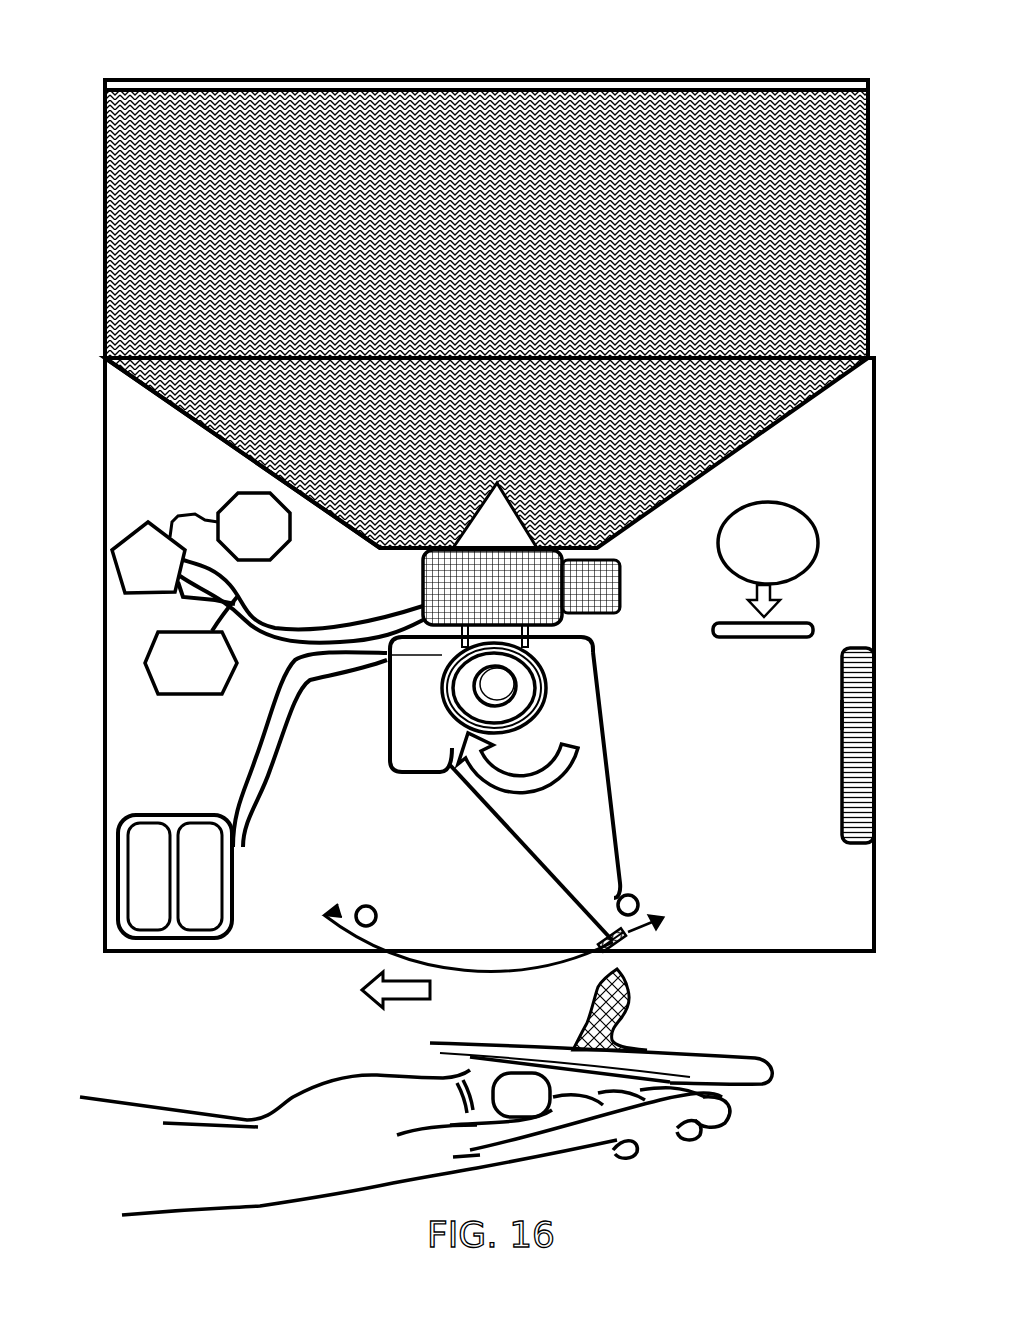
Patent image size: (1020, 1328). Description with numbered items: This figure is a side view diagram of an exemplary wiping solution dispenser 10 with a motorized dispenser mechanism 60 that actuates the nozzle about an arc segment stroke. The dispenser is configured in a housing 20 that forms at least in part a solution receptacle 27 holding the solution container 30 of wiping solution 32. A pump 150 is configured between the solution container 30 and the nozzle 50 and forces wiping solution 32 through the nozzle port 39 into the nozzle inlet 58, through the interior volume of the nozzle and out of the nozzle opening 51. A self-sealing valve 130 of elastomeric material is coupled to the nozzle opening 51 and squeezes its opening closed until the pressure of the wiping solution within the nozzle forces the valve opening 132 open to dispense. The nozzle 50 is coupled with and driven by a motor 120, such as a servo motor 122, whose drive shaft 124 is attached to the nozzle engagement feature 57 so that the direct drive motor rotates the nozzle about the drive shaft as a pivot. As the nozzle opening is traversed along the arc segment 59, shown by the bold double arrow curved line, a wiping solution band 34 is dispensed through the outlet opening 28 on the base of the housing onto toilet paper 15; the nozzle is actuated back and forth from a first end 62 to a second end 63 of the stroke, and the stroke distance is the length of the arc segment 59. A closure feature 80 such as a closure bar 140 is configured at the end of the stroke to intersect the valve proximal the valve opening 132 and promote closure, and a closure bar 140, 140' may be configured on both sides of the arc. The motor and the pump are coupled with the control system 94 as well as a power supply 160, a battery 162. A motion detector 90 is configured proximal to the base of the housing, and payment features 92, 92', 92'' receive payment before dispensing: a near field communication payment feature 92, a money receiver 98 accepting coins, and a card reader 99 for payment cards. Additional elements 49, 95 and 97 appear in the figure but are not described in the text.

The wiping solution dispenser 10 is at (88, 140).
The toilet paper 15 is at (712, 1055).
The housing 20 is at (833, 267).
The solution receptacle 27 is at (805, 147).
The outlet opening 28 is at (477, 970).
The solution container 30 is at (703, 365).
The wiping solution 32 is at (735, 145).
The wiping solution band 34 is at (570, 1033).
The nozzle port 39 is at (415, 552).
The dispensing head 49 is at (605, 515).
The nozzle 50 is at (587, 800).
The nozzle opening 51 is at (612, 922).
The nozzle engagement feature 57 is at (547, 680).
The nozzle inlet 58 is at (560, 640).
The arc segment 59 is at (543, 965).
The motorized dispenser mechanism 60 is at (550, 697).
The first end of stroke 62 is at (665, 920).
The second end of stroke 63 is at (330, 915).
The closure feature 80 is at (640, 905).
The motion detector 90 is at (177, 677).
The payment feature 92 is at (300, 703).
The payment feature 92' is at (751, 652).
The payment feature 92'' is at (801, 698).
The control system 94 is at (190, 507).
The sensor 95 is at (135, 578).
The processor 97 is at (240, 542).
The money receiver 98 is at (735, 622).
The card reader 99 is at (842, 783).
The motor 120 is at (403, 727).
The servo motor 122 is at (400, 787).
The drive shaft 124 is at (450, 693).
The self-sealing valve 130 is at (640, 950).
The valve opening 132 is at (630, 952).
The closure bar 140 is at (658, 861).
The closure bar 140' is at (406, 884).
The pump 150 is at (567, 620).
The power supply 160 is at (190, 900).
The battery 162 is at (200, 930).